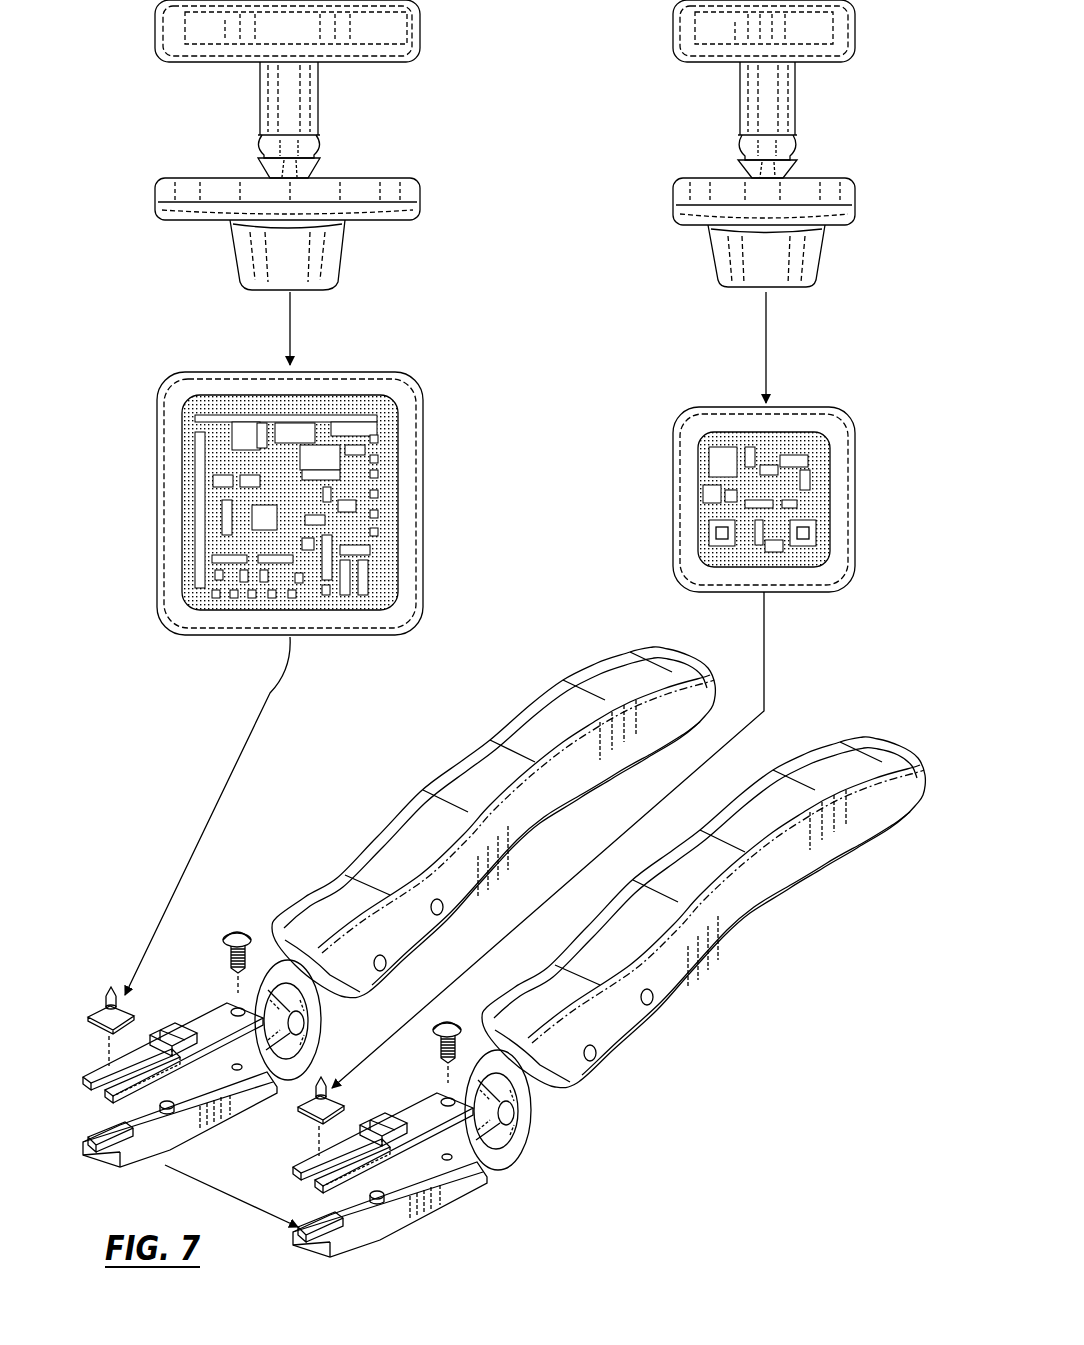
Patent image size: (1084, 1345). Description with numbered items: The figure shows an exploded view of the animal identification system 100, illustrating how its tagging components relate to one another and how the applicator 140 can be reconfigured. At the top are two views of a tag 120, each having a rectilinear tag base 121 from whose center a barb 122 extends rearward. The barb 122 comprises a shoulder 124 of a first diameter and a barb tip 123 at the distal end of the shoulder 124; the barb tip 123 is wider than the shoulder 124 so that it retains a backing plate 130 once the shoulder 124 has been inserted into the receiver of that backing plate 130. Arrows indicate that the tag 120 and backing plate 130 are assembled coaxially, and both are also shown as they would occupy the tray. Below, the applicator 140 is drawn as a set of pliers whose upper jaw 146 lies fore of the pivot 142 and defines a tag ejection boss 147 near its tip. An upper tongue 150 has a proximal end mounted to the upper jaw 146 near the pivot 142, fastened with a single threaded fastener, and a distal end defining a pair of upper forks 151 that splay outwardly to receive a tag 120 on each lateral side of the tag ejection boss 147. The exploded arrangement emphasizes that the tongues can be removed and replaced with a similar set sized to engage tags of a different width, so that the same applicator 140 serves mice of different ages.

The animal identification system 100 is at (128, 22).
The tag 120 is at (816, 296).
The tag base 121 is at (843, 27).
The barb 122 is at (814, 98).
The shoulder 124 is at (765, 100).
The barb tip 123 is at (766, 173).
The backing plate 130 is at (767, 257).
The applicator 140 is at (703, 912).
The pivot 142 is at (522, 1110).
The upper tongue 150 is at (411, 1168).
The upper forks 151 is at (411, 1168).
The upper jaw 146 is at (390, 1222).
The tag ejection boss 147 is at (296, 1251).